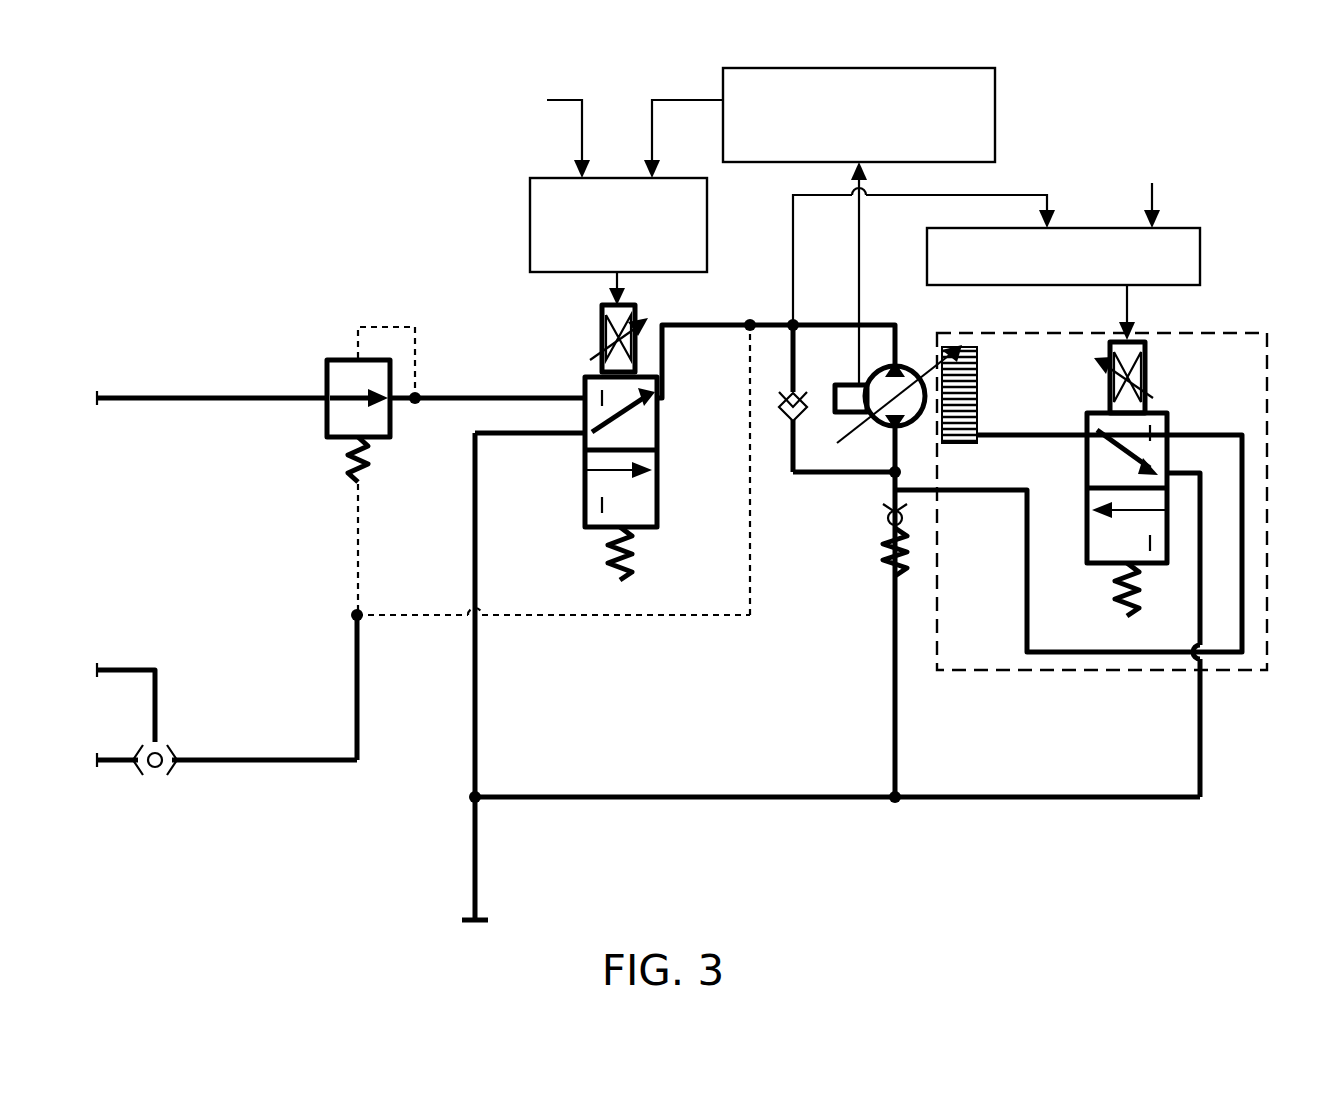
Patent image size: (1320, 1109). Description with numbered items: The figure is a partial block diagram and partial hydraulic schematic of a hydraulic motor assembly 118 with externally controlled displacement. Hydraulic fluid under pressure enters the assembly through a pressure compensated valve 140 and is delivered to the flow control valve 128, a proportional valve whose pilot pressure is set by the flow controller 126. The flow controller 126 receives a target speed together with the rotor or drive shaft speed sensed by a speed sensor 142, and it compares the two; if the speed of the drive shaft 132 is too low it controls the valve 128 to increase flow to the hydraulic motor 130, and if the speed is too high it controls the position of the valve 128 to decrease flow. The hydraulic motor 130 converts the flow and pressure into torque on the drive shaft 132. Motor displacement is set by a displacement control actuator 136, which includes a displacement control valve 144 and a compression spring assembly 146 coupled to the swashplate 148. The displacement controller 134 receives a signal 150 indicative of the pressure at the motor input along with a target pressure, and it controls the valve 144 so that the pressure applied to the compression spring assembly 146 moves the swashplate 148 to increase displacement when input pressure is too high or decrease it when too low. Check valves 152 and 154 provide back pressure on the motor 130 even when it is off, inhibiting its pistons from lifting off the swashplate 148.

The hydraulic motor assembly 118 is at (1270, 125).
The flow controller 126 is at (618, 225).
The flow control valve 128 is at (594, 372).
The hydraulic motor 130 is at (910, 366).
The drive shaft 132 is at (845, 384).
The displacement controller 134 is at (1063, 256).
The displacement control actuator 136 is at (1202, 333).
The pressure compensated valve 140 is at (348, 362).
The speed sensor 142 is at (859, 115).
The displacement control valve 144 is at (1148, 412).
The compression spring assembly 146 is at (978, 398).
The swashplate 148 is at (862, 424).
The signal 150 is at (1020, 190).
The check valve 152 is at (786, 418).
The check valve 154 is at (882, 516).